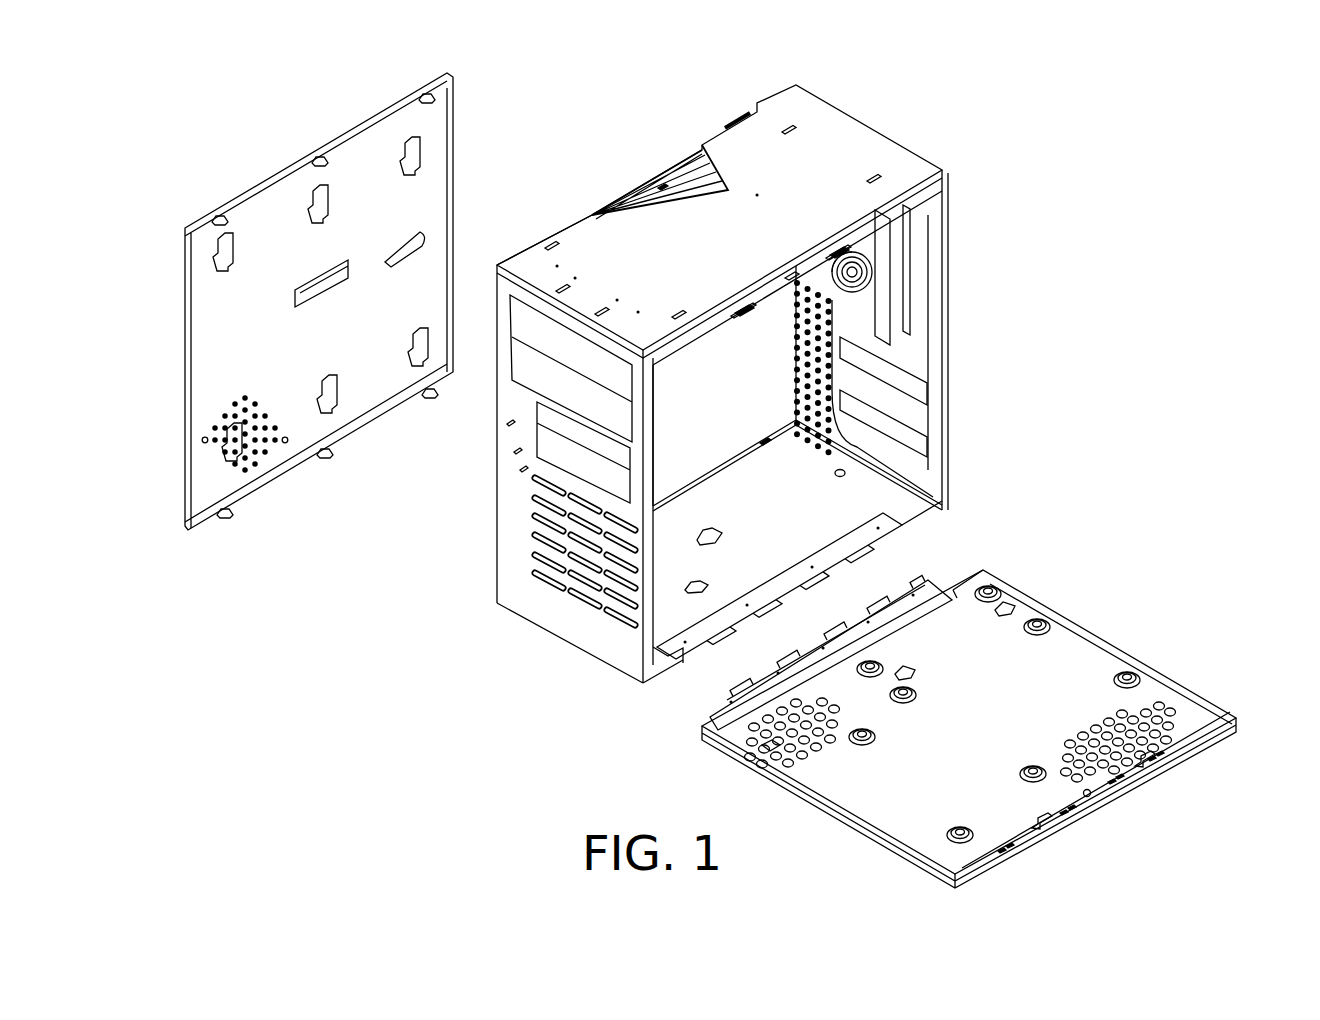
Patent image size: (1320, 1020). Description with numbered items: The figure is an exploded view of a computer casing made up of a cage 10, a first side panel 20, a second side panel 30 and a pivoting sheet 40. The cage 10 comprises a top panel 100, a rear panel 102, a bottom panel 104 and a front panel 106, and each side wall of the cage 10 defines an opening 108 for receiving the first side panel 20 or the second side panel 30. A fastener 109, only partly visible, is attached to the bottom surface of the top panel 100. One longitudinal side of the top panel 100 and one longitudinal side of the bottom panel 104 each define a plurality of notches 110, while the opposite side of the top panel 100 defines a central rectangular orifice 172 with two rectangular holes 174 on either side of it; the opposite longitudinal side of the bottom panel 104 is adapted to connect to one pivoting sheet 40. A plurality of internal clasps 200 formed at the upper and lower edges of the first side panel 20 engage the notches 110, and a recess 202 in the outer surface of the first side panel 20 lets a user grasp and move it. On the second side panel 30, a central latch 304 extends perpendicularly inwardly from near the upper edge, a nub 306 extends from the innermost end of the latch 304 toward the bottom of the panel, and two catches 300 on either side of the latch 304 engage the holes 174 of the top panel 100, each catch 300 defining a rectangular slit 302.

The cage 10 is at (903, 127).
The first side panel 20 is at (260, 162).
The internal clasps 200 is at (215, 222).
The recess 202 is at (417, 245).
The second side panel 30 is at (1107, 618).
The catches 300 is at (1043, 826).
The rectangular slit 302 is at (1143, 756).
The central latch 304 is at (1097, 798).
The nub 306 is at (1087, 791).
The pivoting sheet 40 is at (928, 597).
The top panel 100 is at (567, 247).
The rear panel 102 is at (922, 305).
The bottom panel 104 is at (748, 560).
The front panel 106 is at (515, 575).
The opening 108 is at (693, 385).
The fastener 109 is at (700, 190).
The notches 110 is at (662, 188).
The central rectangular orifice 172 is at (790, 275).
The rectangular holes 174 is at (840, 252).